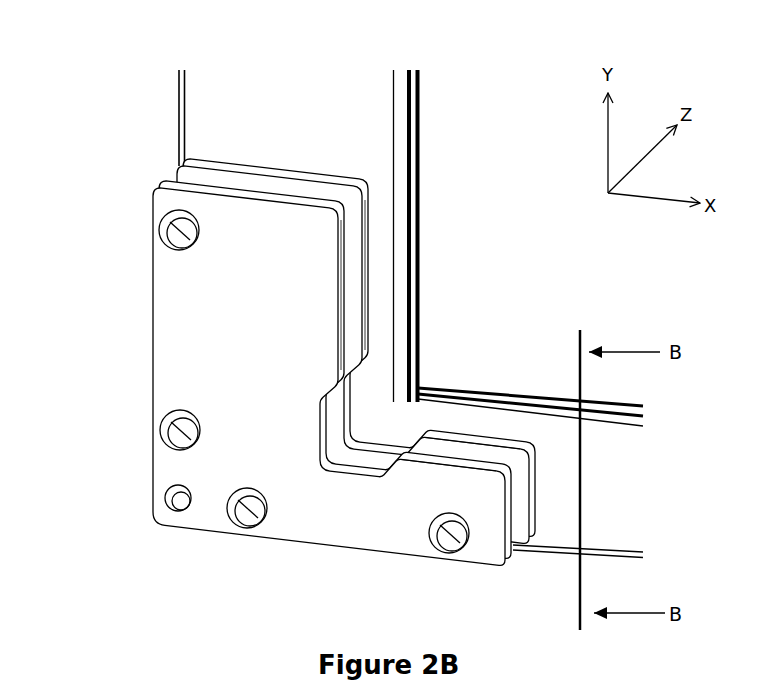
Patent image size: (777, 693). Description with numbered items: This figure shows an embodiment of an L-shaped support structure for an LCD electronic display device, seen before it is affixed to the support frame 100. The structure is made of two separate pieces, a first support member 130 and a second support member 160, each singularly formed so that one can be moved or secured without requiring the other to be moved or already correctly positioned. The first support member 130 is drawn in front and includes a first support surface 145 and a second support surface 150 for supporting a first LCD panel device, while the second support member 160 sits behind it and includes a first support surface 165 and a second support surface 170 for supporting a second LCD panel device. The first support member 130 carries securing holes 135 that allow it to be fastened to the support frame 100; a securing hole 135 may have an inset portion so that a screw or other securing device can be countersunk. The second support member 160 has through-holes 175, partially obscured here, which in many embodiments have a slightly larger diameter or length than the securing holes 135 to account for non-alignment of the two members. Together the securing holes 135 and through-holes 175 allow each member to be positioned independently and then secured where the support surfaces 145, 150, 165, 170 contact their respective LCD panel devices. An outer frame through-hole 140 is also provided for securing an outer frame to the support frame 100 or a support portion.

The support frame 100 is at (428, 75).
The first support member 130 is at (148, 180).
The securing holes 135 is at (188, 252).
The outer frame through-hole 140 is at (192, 488).
The first support surface 145 is at (469, 466).
The second support surface 150 is at (342, 302).
The second support member 160 is at (172, 157).
The first support surface 165 is at (453, 440).
The second support surface 170 is at (369, 240).
The through-holes 175 is at (185, 229).